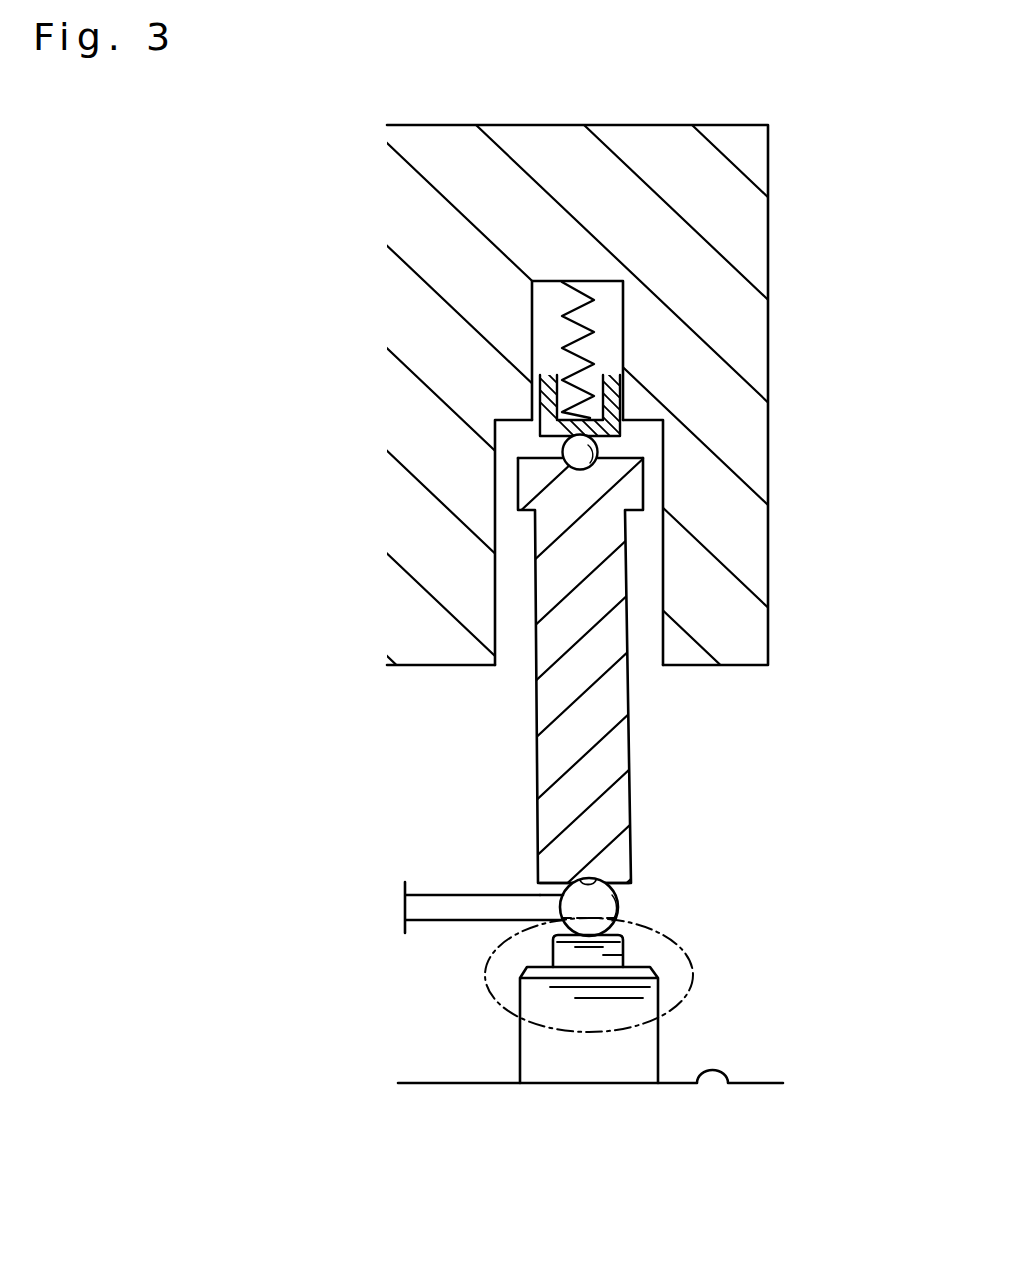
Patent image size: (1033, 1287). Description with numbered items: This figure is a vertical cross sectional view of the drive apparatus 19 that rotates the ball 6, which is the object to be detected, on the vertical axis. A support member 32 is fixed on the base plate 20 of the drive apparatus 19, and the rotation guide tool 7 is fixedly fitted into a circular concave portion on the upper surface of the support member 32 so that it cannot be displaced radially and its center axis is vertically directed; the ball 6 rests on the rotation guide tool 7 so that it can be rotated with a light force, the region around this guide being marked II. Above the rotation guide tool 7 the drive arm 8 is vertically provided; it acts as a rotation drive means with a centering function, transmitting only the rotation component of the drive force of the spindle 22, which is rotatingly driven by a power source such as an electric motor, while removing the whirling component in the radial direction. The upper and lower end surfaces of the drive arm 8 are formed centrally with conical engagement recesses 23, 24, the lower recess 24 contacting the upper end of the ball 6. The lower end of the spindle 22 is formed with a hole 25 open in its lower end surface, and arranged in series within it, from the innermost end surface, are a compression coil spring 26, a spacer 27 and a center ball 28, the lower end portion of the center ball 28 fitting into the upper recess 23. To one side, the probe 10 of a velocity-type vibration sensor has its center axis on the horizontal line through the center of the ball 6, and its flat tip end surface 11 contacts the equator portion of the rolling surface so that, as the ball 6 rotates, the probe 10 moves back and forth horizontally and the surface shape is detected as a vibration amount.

The drive apparatus 19 is at (743, 162).
The spindle 22 is at (425, 220).
The hole 25 is at (623, 300).
The compression coil spring 26 is at (532, 333).
The spacer 27 is at (620, 396).
The center ball 28 is at (545, 445).
The conical engagement recess 23 is at (598, 449).
The drive arm 8 is at (557, 730).
The conical engagement recess 24 is at (578, 877).
The ball 6 is at (600, 893).
The tip end surface 11 is at (565, 887).
The probe 10 is at (493, 910).
The rotation guide tool 7 is at (625, 952).
The support member 32 is at (627, 1058).
The base plate 20 is at (723, 1078).
The region II is at (647, 925).